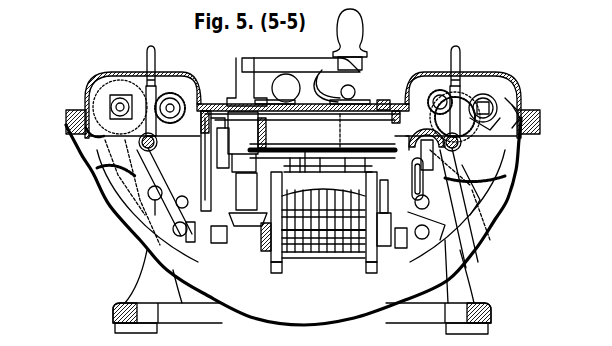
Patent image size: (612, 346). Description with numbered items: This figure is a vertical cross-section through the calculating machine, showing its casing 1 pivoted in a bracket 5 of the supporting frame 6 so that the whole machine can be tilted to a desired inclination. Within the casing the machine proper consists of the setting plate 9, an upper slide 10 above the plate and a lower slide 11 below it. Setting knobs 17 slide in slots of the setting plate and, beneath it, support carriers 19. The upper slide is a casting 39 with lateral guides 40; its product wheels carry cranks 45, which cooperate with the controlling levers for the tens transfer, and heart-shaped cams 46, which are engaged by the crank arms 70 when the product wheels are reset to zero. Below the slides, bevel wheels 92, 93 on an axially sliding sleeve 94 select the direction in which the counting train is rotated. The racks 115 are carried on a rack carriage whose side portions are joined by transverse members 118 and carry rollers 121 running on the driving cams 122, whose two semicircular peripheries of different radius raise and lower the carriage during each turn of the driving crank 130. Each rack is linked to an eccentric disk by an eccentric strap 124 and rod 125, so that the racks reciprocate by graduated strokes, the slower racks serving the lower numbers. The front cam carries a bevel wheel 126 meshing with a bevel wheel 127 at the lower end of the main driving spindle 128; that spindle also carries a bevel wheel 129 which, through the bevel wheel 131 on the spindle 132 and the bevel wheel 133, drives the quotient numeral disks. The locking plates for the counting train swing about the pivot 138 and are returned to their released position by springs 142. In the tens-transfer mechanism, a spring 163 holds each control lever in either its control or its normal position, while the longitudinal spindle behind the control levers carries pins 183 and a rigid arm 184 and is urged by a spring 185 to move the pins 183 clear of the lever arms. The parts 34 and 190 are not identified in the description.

The casing 1 is at (135, 198).
The bracket 5 is at (435, 285).
The supporting frame 6 is at (491, 308).
The setting plate 9 is at (244, 100).
The upper slide 10 is at (498, 96).
The lower slide 11 is at (118, 74).
The setting knobs 17 is at (353, 92).
The carriers 19 is at (346, 140).
The handle arm 34 is at (350, 80).
The casting 39 is at (514, 102).
The lateral guides 40 is at (532, 112).
The cranks 45 is at (523, 103).
The heart-shaped cams 46 is at (492, 100).
The crank arms 70 is at (483, 98).
The bevel wheel 92 is at (490, 183).
The bevel wheel 93 is at (395, 136).
The sleeve 94 is at (470, 176).
The racks 115 is at (312, 145).
The transverse members 118 is at (291, 174).
The rollers 121 is at (367, 260).
The driving cams 122 is at (372, 274).
The eccentric strap 124 is at (320, 256).
The eccentric rod 125 is at (300, 262).
The bevel wheel 126 is at (262, 250).
The bevel wheel 127 is at (258, 214).
The main driving spindle 128 is at (252, 121).
The bevel wheel 129 is at (247, 191).
The driving crank 130 is at (280, 60).
The bevel wheel 131 is at (252, 155).
The spindle 132 is at (303, 165).
The bevel wheel 133 is at (428, 190).
The pivot 138 is at (400, 250).
The springs 142 is at (108, 178).
The spring 163 is at (437, 250).
The pin 183 is at (430, 229).
The rigid arm 184 is at (424, 236).
The spring 185 is at (388, 250).
The pin 190 is at (148, 196).